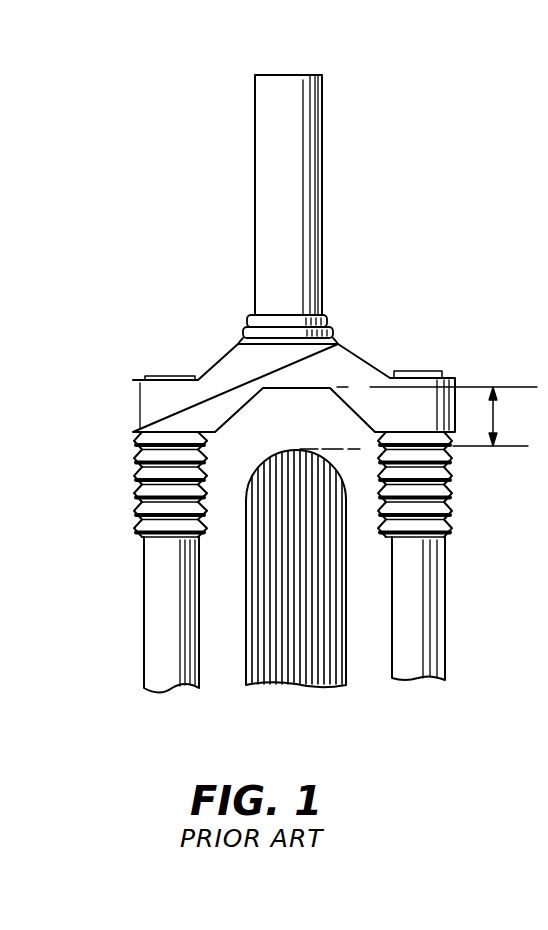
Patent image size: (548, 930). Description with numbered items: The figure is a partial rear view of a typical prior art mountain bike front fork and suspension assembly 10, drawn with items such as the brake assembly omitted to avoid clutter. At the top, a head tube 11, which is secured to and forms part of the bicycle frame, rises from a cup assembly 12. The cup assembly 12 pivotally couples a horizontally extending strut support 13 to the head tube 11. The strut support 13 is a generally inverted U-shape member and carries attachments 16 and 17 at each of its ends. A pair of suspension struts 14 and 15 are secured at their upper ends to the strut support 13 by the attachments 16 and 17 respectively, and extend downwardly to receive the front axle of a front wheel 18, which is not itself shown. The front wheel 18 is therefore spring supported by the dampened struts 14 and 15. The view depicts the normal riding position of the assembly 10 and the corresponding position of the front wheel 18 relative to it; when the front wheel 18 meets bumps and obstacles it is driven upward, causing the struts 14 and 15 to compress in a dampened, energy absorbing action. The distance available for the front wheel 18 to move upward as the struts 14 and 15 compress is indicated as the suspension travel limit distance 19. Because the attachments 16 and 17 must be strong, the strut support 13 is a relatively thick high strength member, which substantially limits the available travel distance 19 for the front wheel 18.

The front fork and suspension assembly 10 is at (348, 227).
The head tube 11 is at (311, 168).
The cup assembly 12 is at (334, 330).
The strut support 13 is at (342, 370).
The suspension strut 14 is at (445, 630).
The suspension strut 15 is at (148, 624).
The attachment 16 is at (424, 371).
The attachment 17 is at (169, 376).
The front wheel 18 is at (347, 640).
The suspension travel limit distance 19 is at (497, 413).